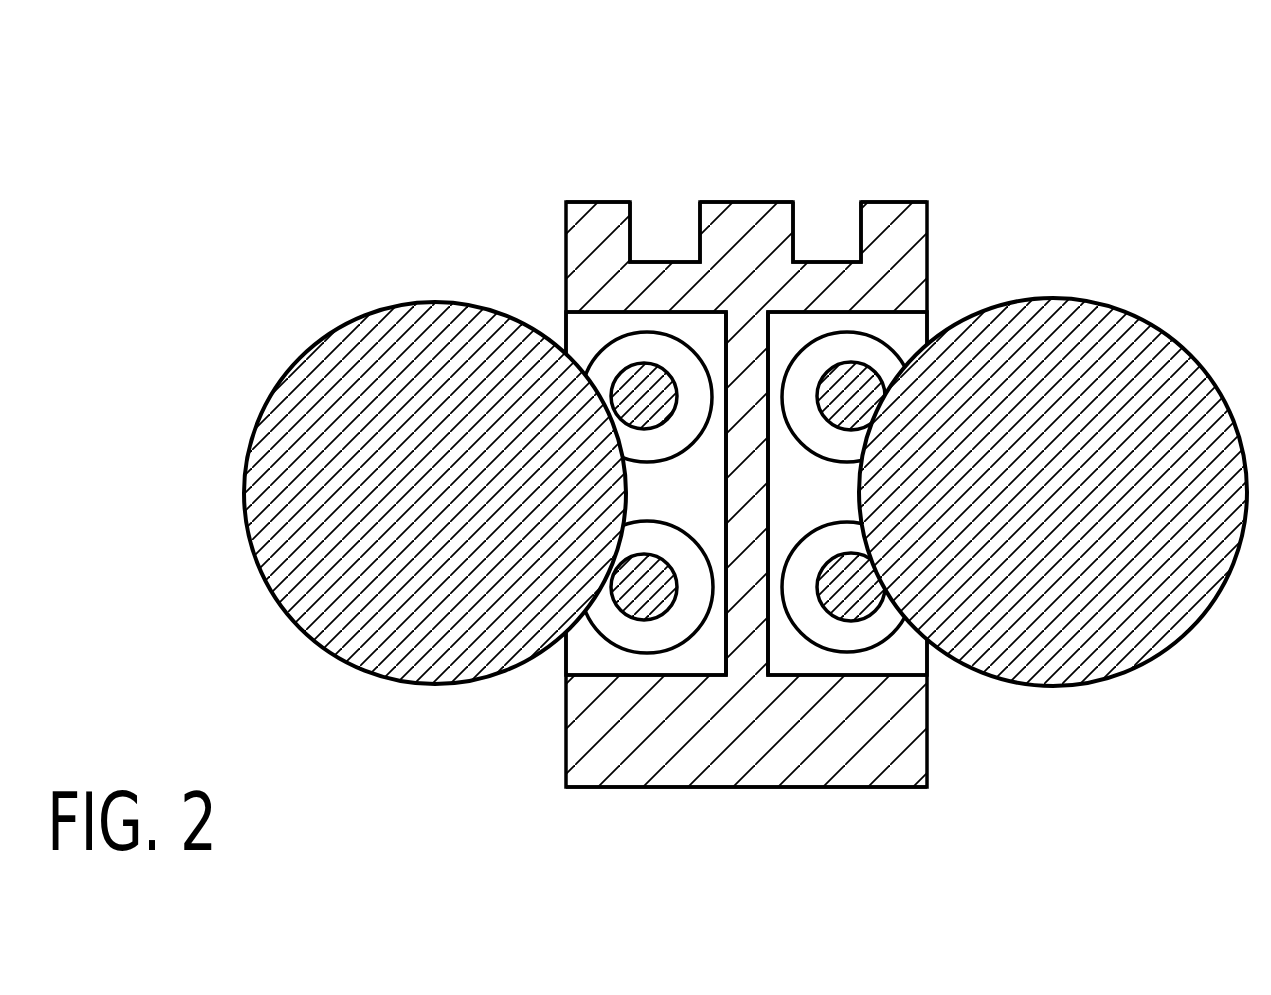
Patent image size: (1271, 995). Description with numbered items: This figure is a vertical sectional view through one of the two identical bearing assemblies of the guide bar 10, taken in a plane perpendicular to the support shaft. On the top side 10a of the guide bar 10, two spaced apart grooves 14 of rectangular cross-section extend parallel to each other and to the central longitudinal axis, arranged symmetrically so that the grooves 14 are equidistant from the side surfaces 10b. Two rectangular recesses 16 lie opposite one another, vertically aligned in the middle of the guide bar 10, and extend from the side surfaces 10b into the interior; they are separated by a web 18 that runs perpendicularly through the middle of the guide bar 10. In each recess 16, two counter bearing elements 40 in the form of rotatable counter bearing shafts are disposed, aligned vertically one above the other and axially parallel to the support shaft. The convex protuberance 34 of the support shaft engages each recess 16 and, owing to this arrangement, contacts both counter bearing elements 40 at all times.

The guide bar 10 is at (910, 222).
The top side 10a is at (718, 202).
The side surfaces 10b is at (566, 757).
The grooves 14 is at (640, 188).
The recesses 16 is at (578, 658).
The web 18 is at (727, 494).
The protuberances 34 is at (360, 313).
The counter bearing elements 40 is at (668, 332).